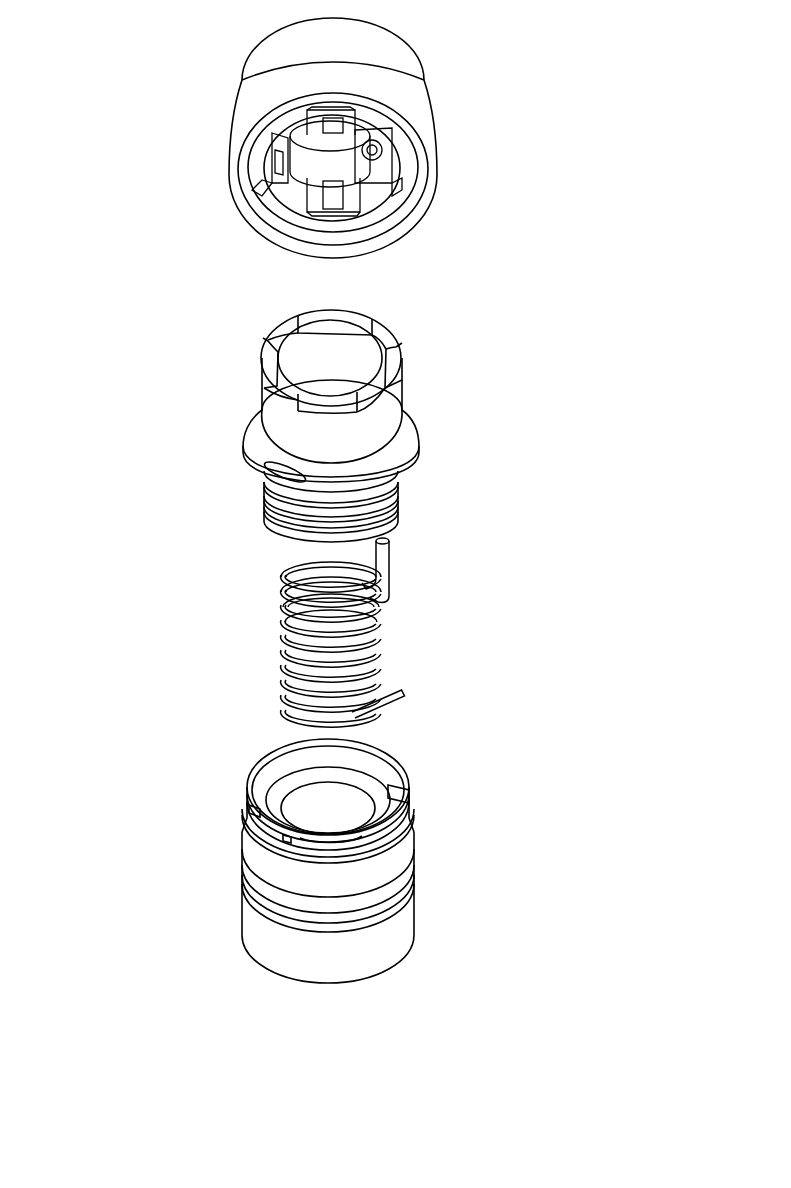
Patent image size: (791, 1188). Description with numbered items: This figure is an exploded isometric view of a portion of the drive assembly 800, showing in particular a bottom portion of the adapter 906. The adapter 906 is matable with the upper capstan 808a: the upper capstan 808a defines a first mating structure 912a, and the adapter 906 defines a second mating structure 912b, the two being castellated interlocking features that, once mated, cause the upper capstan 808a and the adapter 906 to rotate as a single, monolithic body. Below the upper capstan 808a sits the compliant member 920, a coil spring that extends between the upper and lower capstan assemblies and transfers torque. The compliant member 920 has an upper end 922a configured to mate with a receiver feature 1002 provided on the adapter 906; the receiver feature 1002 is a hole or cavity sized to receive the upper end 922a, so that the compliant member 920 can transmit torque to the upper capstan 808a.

The drive assembly 800 is at (110, 98).
The adapter 906 is at (428, 70).
The second mating structure 912b is at (272, 193).
The receiver feature 1002 is at (382, 147).
The upper capstan 808a is at (422, 427).
The first mating structure 912a is at (260, 384).
The compliant member 920 is at (270, 645).
The upper end 922a is at (398, 573).